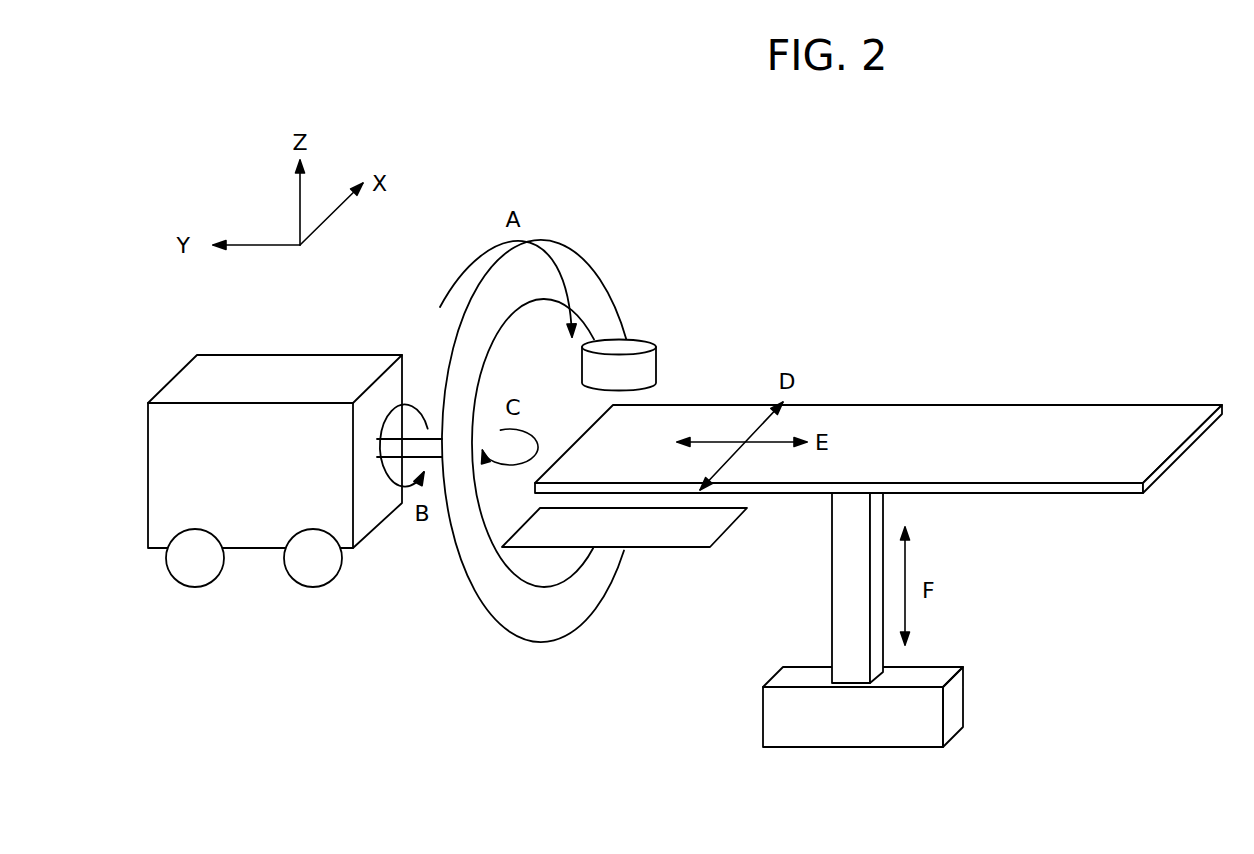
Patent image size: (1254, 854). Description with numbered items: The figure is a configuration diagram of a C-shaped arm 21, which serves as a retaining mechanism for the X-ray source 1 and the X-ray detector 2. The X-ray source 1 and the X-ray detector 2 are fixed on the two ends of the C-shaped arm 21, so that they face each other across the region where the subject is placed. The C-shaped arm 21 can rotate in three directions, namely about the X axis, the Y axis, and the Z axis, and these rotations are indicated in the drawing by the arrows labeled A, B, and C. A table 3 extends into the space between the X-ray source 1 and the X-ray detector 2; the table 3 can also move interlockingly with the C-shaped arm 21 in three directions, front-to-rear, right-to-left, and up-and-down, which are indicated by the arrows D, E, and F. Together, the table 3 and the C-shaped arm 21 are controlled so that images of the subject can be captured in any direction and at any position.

The X-ray source 1 is at (651, 363).
The X-ray detector 2 is at (666, 549).
The table 3 is at (1139, 417).
The C-shaped arm 21 is at (458, 353).